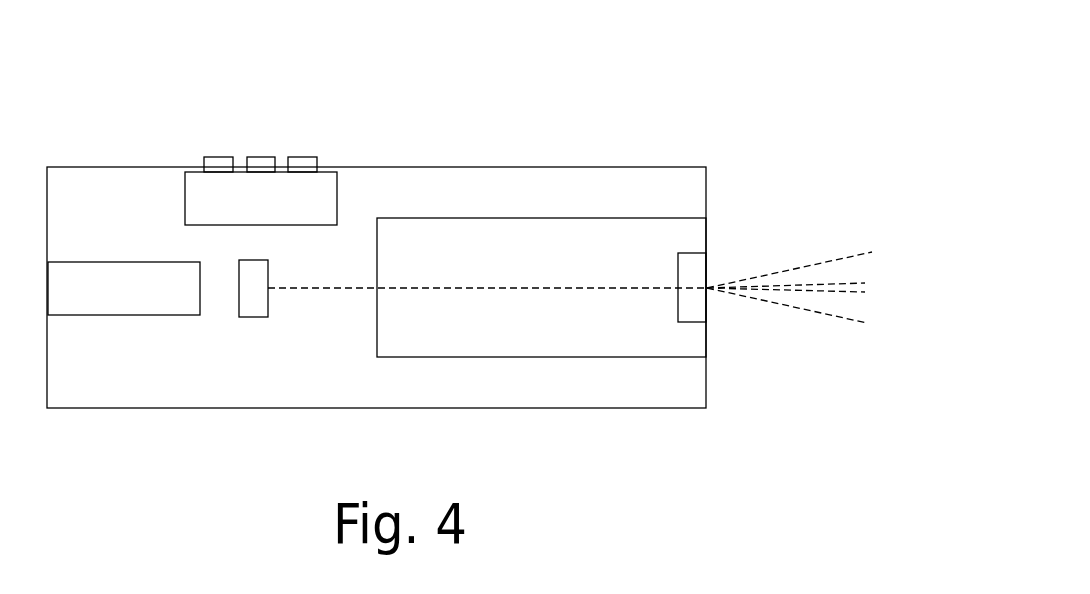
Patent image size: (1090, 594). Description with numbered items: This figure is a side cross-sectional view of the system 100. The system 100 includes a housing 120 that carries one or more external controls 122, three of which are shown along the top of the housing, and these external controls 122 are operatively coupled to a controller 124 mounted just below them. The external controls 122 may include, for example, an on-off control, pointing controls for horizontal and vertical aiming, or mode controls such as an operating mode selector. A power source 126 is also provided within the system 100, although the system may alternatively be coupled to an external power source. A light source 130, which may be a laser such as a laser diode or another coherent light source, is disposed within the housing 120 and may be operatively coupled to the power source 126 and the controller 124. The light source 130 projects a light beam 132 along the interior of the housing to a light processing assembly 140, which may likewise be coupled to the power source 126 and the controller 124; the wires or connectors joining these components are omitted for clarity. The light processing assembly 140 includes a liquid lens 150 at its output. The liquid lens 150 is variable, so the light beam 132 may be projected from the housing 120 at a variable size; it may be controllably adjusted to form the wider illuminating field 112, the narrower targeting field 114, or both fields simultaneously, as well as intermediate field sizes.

The system 100 is at (148, 62).
The housing 120 is at (130, 167).
The external controls 122 is at (297, 157).
The controller 124 is at (329, 167).
The power source 126 is at (142, 260).
The light source 130 is at (253, 317).
The light beam 132 is at (323, 288).
The light processing assembly 140 is at (603, 218).
The liquid lens 150 is at (707, 253).
The targeting field 114 is at (818, 283).
The illuminating field 112 is at (833, 317).